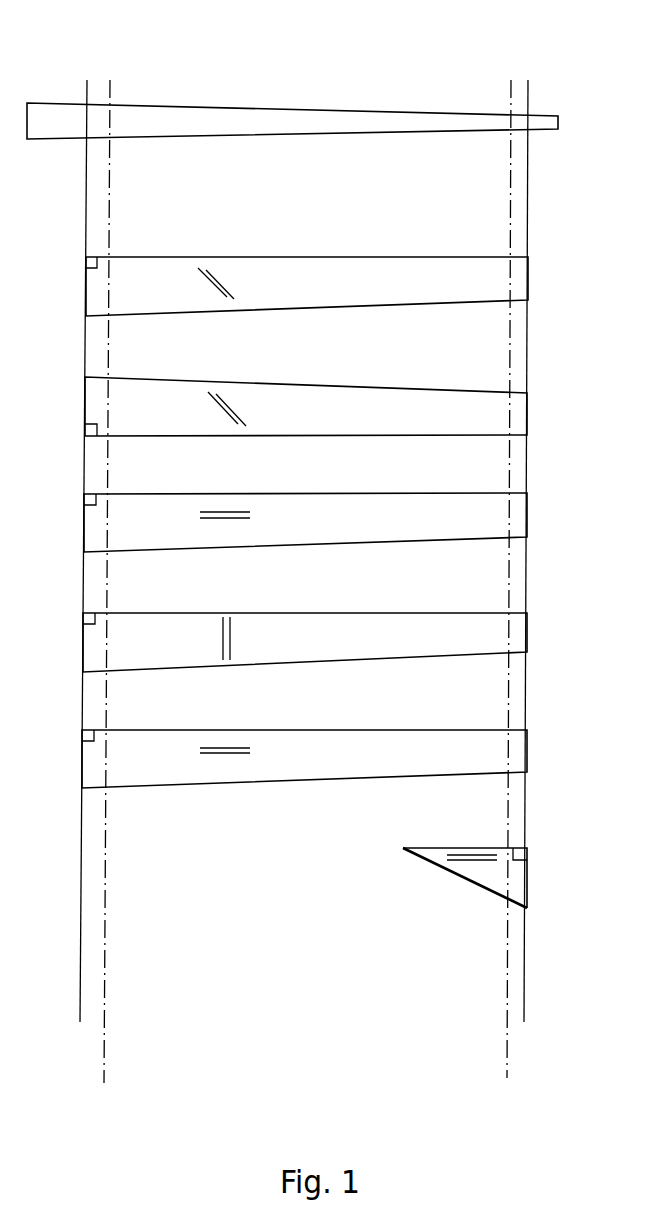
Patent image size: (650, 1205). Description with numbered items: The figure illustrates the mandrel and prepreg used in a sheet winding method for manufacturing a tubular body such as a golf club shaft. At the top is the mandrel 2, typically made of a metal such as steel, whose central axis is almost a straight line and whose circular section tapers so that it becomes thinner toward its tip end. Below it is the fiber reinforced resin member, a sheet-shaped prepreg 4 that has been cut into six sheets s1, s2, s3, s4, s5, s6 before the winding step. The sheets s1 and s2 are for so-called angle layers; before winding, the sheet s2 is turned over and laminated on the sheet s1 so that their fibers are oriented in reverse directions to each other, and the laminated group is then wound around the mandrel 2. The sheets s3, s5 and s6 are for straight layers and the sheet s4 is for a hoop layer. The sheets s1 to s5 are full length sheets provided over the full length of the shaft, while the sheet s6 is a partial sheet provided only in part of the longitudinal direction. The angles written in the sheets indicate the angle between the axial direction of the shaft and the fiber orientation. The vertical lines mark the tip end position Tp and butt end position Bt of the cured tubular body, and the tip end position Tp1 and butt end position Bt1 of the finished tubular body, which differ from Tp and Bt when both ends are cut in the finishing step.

The mandrel 2 is at (463, 122).
The prepreg 4 is at (587, 240).
The sheet s1 is at (408, 275).
The sheet s2 is at (408, 405).
The sheet s3 is at (408, 510).
The sheet s4 is at (408, 628).
The sheet s5 is at (408, 747).
The sheet s6 is at (478, 872).
The butt end position of the cured tubular body Bt is at (80, 569).
The butt end position of the tubular body Bt1 is at (102, 599).
The tip end position of the cured tubular body Tp is at (524, 569).
The tip end position of the tubular body Tp1 is at (507, 599).